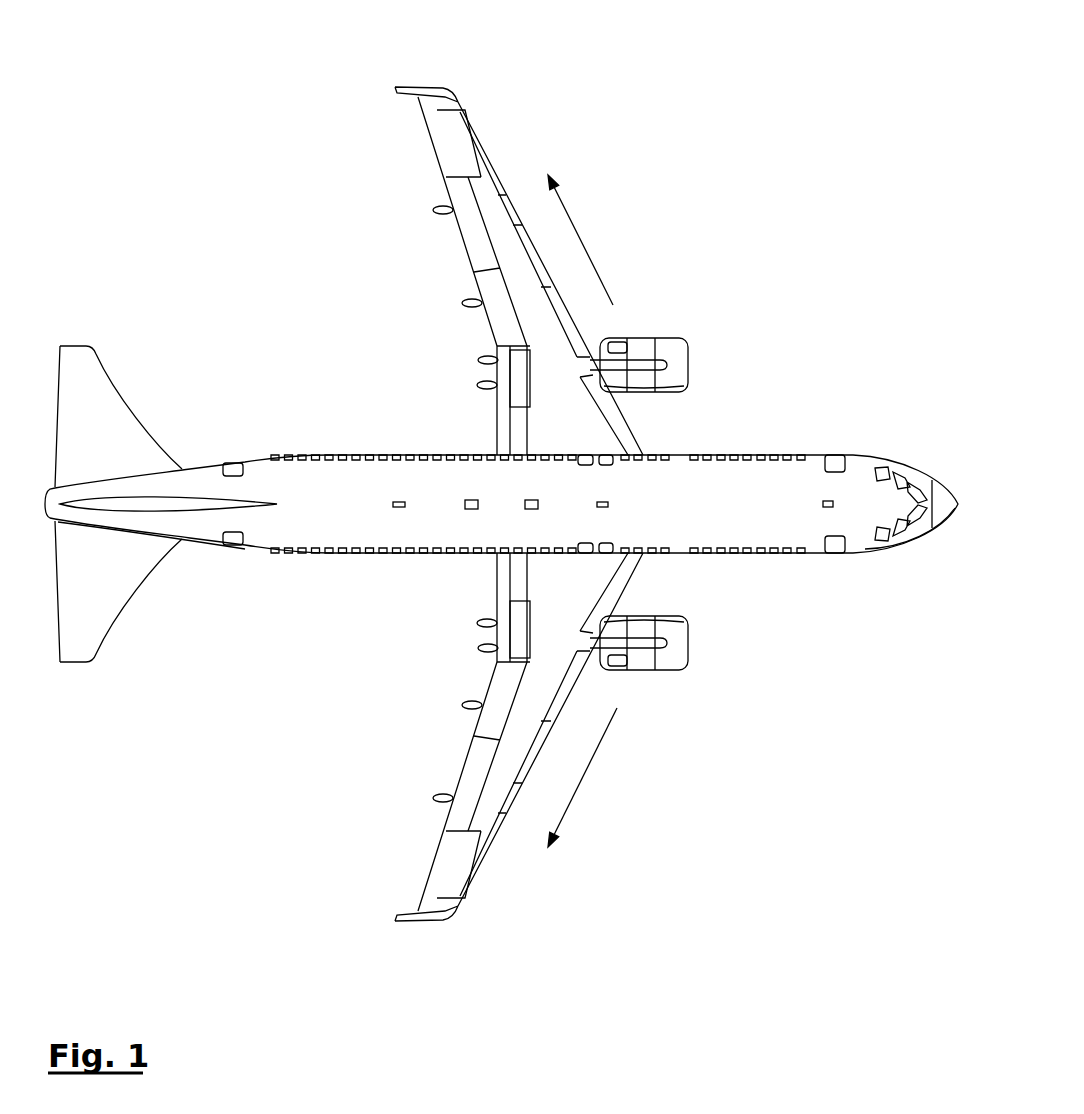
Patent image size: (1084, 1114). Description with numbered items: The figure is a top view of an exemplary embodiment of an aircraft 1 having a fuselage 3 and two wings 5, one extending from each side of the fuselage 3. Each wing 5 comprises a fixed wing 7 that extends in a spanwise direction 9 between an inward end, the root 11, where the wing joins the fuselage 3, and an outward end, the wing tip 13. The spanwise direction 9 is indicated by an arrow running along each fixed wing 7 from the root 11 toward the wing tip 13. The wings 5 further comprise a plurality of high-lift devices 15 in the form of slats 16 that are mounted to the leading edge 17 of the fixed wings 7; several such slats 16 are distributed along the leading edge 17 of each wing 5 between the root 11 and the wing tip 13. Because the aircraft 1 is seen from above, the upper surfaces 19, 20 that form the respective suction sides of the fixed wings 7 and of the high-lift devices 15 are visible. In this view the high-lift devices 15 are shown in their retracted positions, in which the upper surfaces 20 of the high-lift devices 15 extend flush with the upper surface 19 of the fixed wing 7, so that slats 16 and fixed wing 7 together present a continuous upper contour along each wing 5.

The aircraft 1 is at (246, 190).
The fuselage 3 is at (345, 523).
The wing 5 is at (445, 293).
The fixed wing 7 is at (537, 342).
The spanwise direction 9 is at (586, 244).
The root 11 is at (560, 425).
The wing tip 13 is at (417, 72).
The high-lift device 15 is at (527, 243).
The slat 16 is at (578, 342).
The leading edge 17 is at (463, 70).
The upper surface of the fixed wing 19 is at (581, 406).
The upper surface of the high-lift device 20 is at (478, 148).